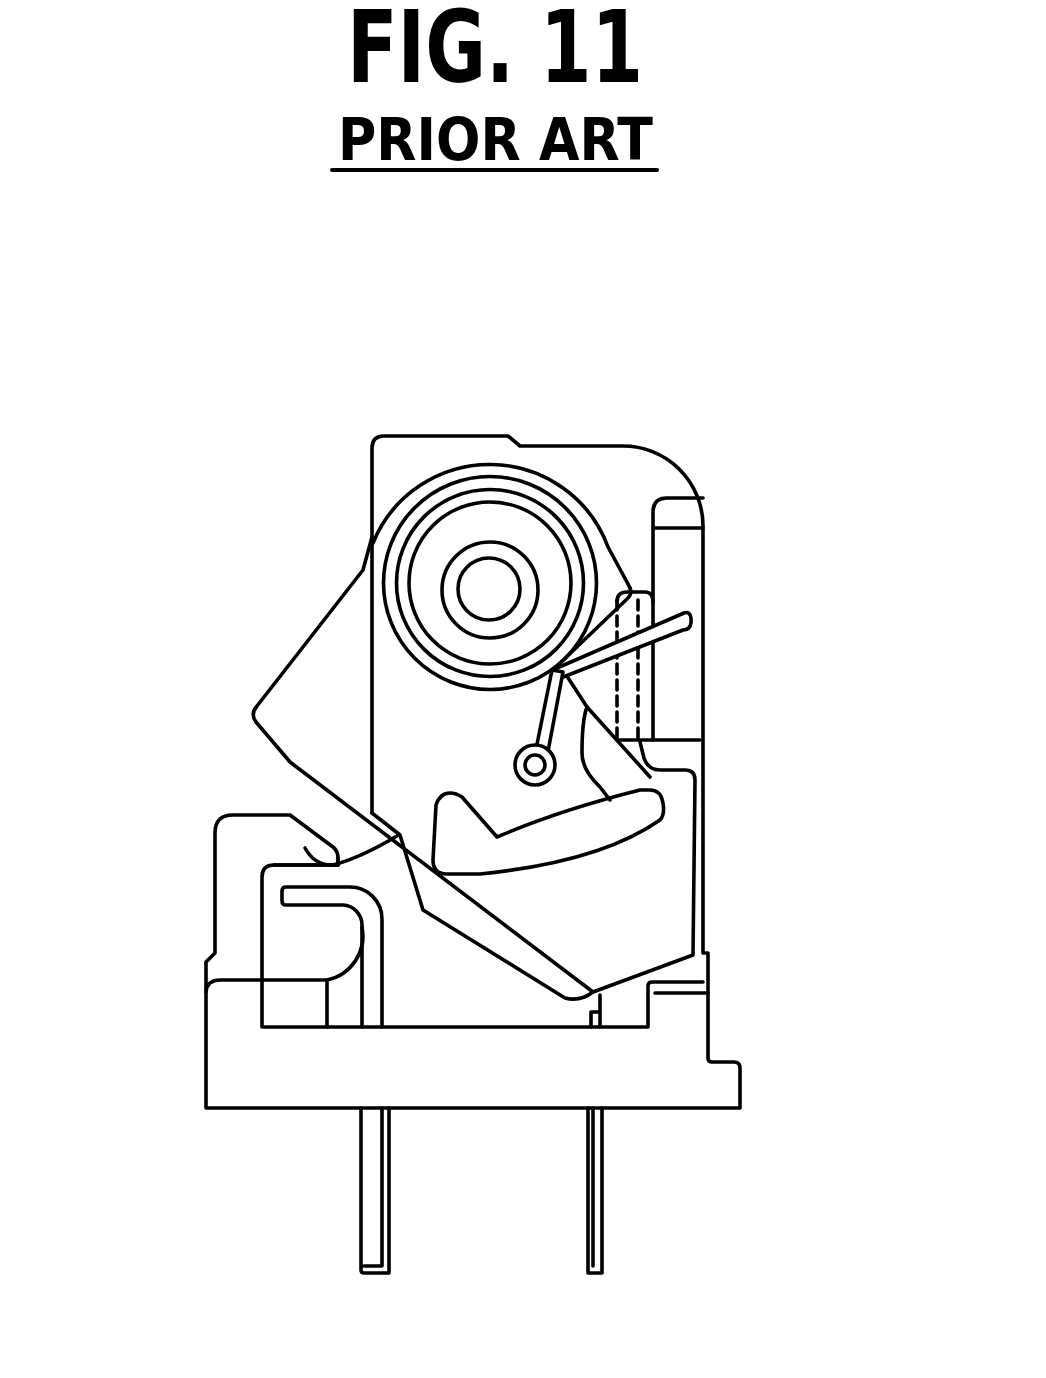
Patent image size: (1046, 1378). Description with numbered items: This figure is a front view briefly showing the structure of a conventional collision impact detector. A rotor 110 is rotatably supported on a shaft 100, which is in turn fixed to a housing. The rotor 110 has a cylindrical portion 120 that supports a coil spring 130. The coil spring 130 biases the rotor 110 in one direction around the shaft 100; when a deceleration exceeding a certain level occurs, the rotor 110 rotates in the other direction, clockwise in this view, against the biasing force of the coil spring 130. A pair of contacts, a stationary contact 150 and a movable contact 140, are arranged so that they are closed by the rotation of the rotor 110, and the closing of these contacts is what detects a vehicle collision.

The shaft 100 is at (497, 583).
The rotor 110 is at (323, 643).
The cylindrical portion 120 is at (500, 530).
The coil spring 130 is at (452, 502).
The movable contact 140 is at (334, 893).
The stationary contact 150 is at (300, 905).